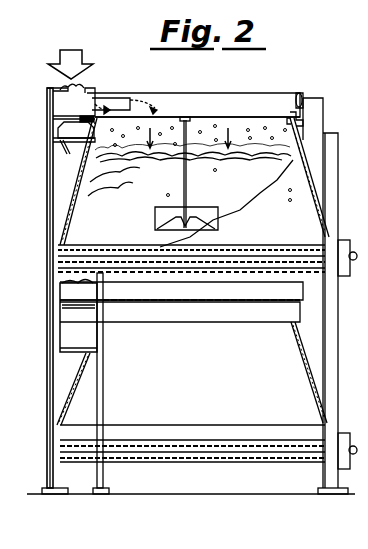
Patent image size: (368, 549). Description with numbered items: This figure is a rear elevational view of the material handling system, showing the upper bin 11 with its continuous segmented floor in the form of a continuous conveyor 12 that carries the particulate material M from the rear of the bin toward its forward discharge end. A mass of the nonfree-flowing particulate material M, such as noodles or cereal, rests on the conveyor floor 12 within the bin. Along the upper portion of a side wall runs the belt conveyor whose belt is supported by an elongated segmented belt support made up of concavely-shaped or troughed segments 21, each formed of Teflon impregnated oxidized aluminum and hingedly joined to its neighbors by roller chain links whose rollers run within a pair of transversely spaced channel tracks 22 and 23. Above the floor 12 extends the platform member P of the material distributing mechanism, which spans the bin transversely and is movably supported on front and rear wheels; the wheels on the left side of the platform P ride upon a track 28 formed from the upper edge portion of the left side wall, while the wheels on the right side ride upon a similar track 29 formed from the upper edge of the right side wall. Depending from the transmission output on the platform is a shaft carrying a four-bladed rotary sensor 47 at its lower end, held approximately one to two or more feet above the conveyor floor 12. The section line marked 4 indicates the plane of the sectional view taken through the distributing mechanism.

The channel track 22 is at (54, 88).
The troughed segment 21 is at (95, 88).
The channel track 23 is at (100, 95).
The track 28 is at (96, 118).
The platform member P is at (270, 93).
The track 29 is at (299, 93).
The upper bin 11 is at (312, 192).
The continuous conveyor 12 is at (232, 252).
The particulate material M is at (130, 226).
The four-bladed rotary sensor 47 is at (205, 208).
The section line 4- 4 is at (222, 72).